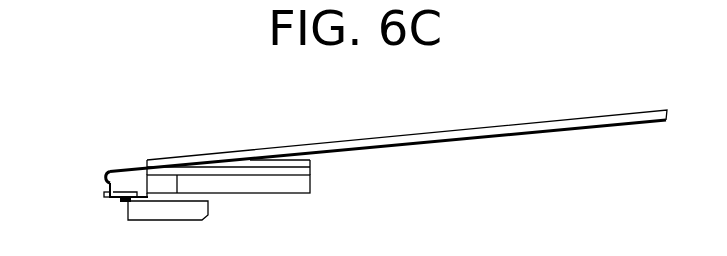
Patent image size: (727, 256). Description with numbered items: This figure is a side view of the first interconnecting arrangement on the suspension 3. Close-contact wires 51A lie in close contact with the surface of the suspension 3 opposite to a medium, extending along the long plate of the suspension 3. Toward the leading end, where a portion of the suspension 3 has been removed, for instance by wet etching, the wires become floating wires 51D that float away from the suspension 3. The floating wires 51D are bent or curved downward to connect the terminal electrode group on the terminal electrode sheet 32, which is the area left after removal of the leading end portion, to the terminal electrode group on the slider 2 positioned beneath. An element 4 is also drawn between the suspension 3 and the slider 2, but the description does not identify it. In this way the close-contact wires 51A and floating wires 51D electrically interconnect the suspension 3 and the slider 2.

The slider 2 is at (204, 207).
The suspension 3 is at (380, 132).
The piezoelectric element 4 is at (297, 182).
The terminal electrode sheet 32 is at (106, 197).
The close-contact wires 51A is at (518, 138).
The floating wires 51D is at (120, 168).